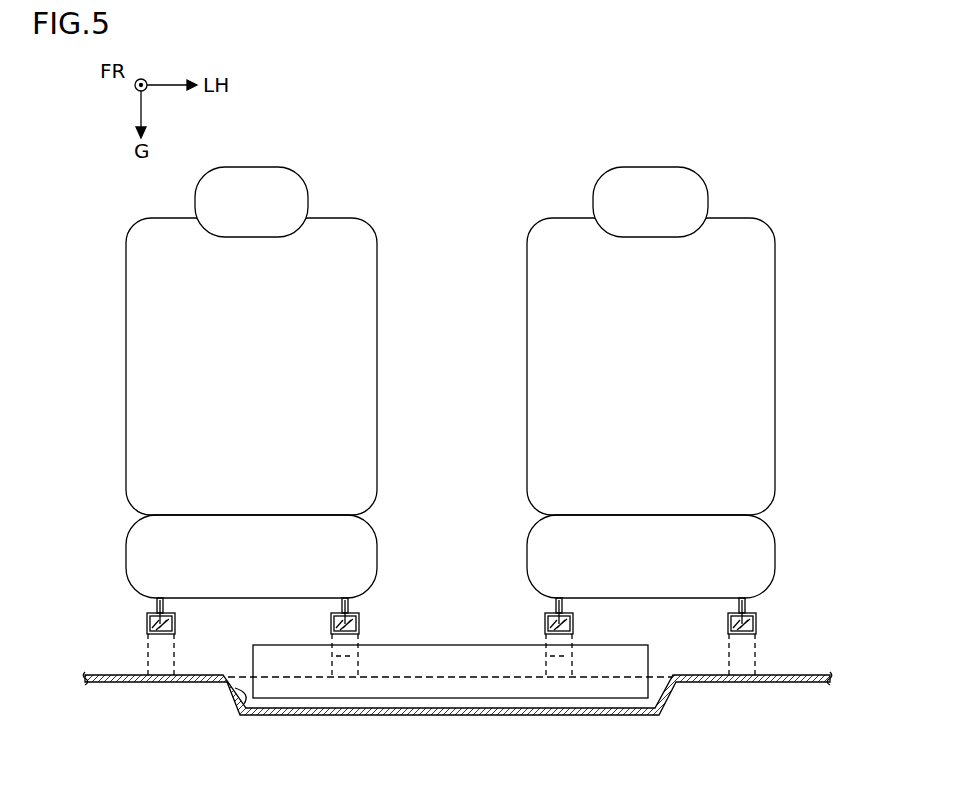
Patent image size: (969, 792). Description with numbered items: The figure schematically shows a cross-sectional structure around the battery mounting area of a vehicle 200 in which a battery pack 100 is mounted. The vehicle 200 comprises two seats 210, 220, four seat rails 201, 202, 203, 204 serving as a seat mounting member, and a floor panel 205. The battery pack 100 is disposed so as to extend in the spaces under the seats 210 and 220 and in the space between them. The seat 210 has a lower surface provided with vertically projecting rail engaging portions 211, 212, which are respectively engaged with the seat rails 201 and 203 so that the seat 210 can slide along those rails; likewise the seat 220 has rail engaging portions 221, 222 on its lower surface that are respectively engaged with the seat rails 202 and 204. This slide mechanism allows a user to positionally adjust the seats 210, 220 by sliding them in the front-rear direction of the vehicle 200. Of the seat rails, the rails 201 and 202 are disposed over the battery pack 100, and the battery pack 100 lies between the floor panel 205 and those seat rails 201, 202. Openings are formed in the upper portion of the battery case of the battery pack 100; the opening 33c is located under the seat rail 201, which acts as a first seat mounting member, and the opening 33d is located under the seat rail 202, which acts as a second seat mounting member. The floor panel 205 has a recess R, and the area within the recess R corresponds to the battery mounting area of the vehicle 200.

The vehicle 200 is at (774, 153).
The seat 210 is at (128, 236).
The seat 220 is at (773, 235).
The rail engaging portion 211 is at (349, 611).
The rail engaging portion 212 is at (157, 611).
The rail engaging portion 221 is at (556, 611).
The rail engaging portion 222 is at (748, 611).
The seat rail 201 is at (359, 624).
The seat rail 202 is at (545, 624).
The seat rail 203 is at (147, 624).
The seat rail 204 is at (757, 624).
The floor panel 205 is at (128, 675).
The battery pack 100 is at (447, 660).
The recess R is at (249, 719).
The opening 33c is at (345, 656).
The opening 33d is at (558, 656).